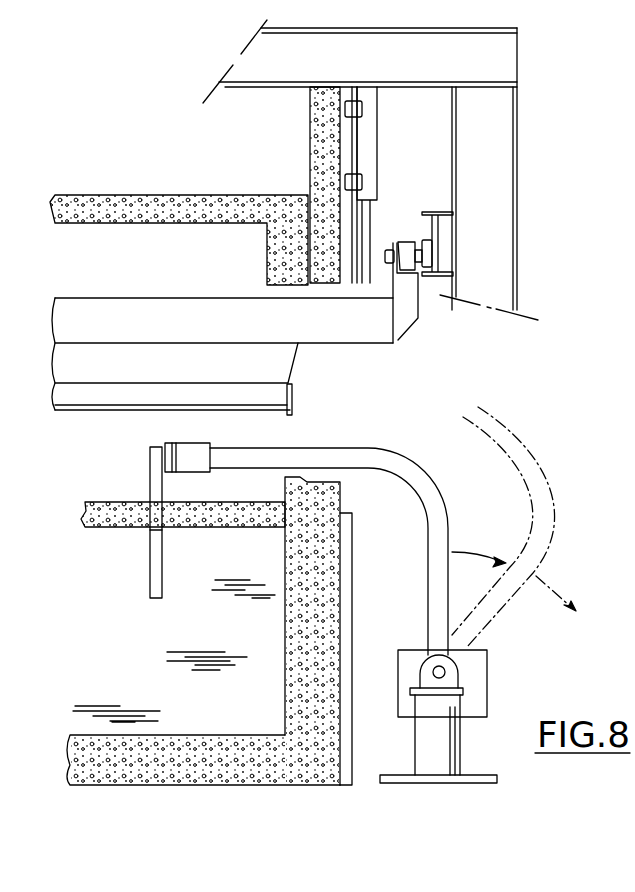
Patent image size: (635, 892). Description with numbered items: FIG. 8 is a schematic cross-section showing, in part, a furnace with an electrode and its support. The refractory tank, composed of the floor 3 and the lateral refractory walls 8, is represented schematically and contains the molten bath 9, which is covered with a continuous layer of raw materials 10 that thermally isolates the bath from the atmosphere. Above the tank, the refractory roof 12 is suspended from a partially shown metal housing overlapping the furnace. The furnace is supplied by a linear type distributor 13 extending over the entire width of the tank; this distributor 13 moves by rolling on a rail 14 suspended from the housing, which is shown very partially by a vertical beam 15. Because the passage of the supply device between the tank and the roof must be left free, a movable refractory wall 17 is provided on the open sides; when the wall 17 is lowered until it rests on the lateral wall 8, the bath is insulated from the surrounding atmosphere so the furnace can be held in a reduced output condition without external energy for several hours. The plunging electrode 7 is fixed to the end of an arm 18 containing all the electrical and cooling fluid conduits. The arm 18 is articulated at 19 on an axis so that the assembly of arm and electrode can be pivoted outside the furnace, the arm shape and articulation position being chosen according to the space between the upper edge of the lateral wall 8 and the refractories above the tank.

The floor 3 is at (167, 748).
The plunging electrode 7 is at (162, 575).
The lateral refractory wall 8 is at (300, 652).
The molten bath 9 is at (141, 643).
The layer of raw materials 10 is at (115, 515).
The refractory roof 12 is at (183, 212).
The linear type distributor 13 is at (313, 388).
The rail 14 is at (425, 212).
The vertical beam 15 is at (497, 183).
The movable refractory wall 17 is at (315, 143).
The electrode support arm 18 is at (390, 460).
The articulation 19 is at (438, 698).